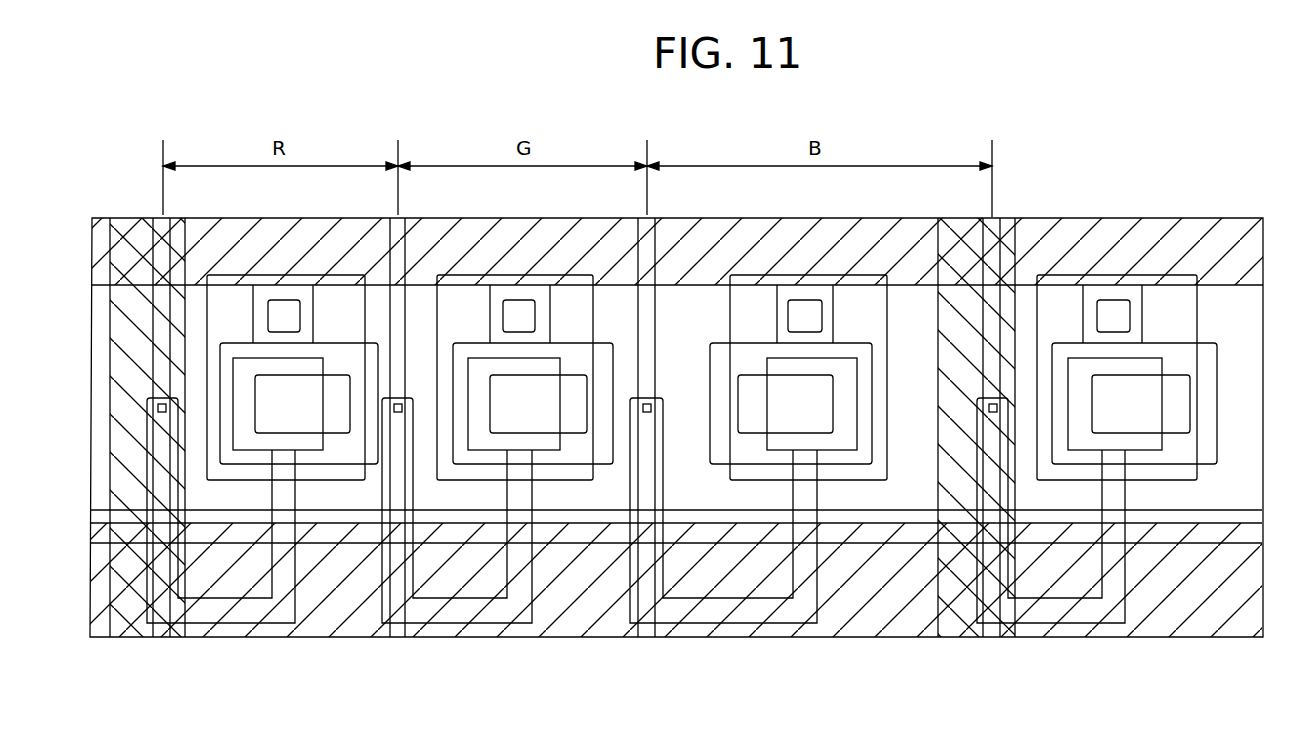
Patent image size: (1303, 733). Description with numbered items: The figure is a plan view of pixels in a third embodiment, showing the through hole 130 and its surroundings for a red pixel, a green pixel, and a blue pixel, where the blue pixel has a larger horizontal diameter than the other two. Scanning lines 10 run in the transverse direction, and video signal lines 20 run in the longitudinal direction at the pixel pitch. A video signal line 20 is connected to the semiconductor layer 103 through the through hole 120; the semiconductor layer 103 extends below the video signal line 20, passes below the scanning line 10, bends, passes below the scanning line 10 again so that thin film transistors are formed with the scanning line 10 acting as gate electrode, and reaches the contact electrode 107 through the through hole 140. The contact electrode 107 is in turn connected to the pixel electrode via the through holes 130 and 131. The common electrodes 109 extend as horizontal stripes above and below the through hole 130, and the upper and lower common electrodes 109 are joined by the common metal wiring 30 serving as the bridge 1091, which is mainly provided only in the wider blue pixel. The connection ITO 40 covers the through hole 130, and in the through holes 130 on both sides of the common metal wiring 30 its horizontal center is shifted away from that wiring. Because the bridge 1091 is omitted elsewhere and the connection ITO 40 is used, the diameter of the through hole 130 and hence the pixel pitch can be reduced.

The scanning line 10 is at (863, 537).
The video signal line 20 is at (650, 257).
The common metal wiring 30 is at (960, 620).
The connection ITO 40 is at (890, 363).
The semiconductor layer 103 is at (693, 613).
The contact electrode 107 is at (900, 357).
The common electrode 109 is at (1145, 230).
The common-electrode bridge 1091 is at (1010, 335).
The through hole 120 is at (650, 400).
The through hole 130 is at (843, 370).
The through hole 131 is at (757, 410).
The through hole 140 is at (805, 315).